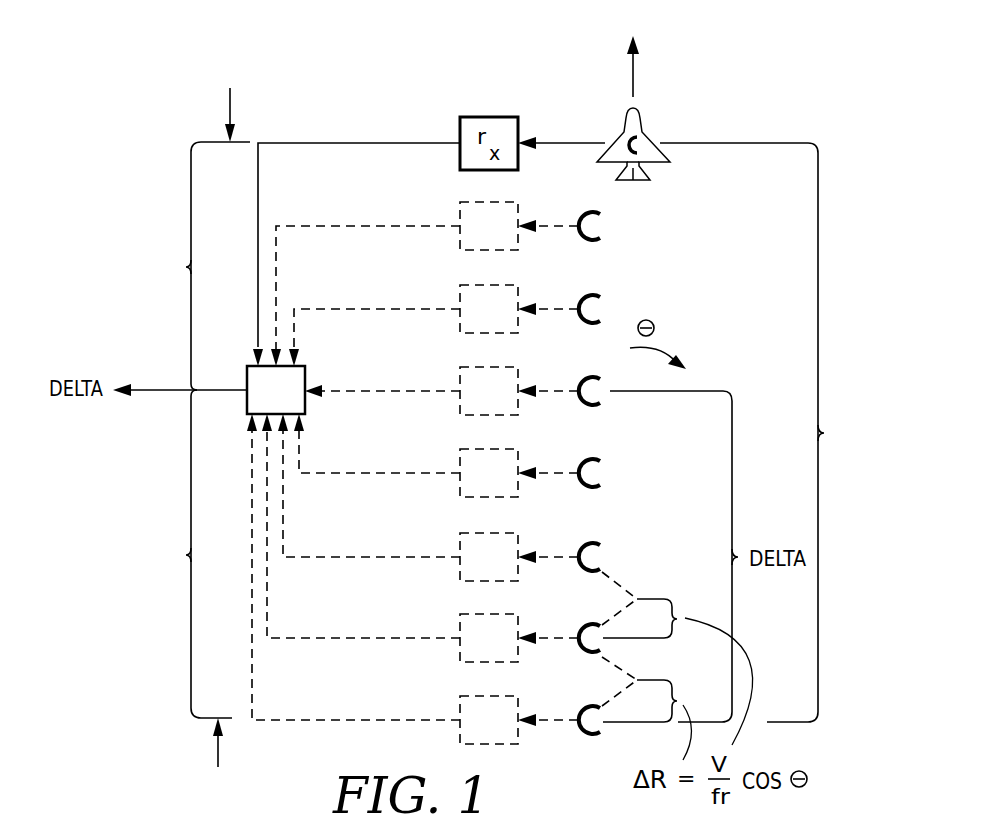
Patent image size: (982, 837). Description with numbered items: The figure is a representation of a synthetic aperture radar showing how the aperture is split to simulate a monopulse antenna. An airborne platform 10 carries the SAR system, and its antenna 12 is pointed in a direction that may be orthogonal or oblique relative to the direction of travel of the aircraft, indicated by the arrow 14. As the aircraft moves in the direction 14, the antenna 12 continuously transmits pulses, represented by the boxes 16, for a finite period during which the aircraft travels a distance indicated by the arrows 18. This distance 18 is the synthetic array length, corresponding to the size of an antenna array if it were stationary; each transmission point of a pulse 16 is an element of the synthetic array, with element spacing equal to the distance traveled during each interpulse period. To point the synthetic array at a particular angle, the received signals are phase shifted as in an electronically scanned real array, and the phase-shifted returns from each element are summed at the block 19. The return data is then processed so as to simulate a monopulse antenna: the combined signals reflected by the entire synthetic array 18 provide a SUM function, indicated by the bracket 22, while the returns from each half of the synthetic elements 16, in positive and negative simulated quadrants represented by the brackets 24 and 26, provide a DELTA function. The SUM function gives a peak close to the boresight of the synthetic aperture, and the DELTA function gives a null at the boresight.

The airborne platform 10 is at (647, 147).
The antenna 12 is at (623, 153).
The direction of travel 14 is at (632, 80).
The pulses 16 is at (458, 203).
The synthetic array length 18 is at (224, 432).
The summing block 19 is at (247, 372).
The SUM bracket 22 is at (818, 327).
The positive quadrant bracket 24 is at (191, 680).
The negative quadrant bracket 26 is at (191, 203).